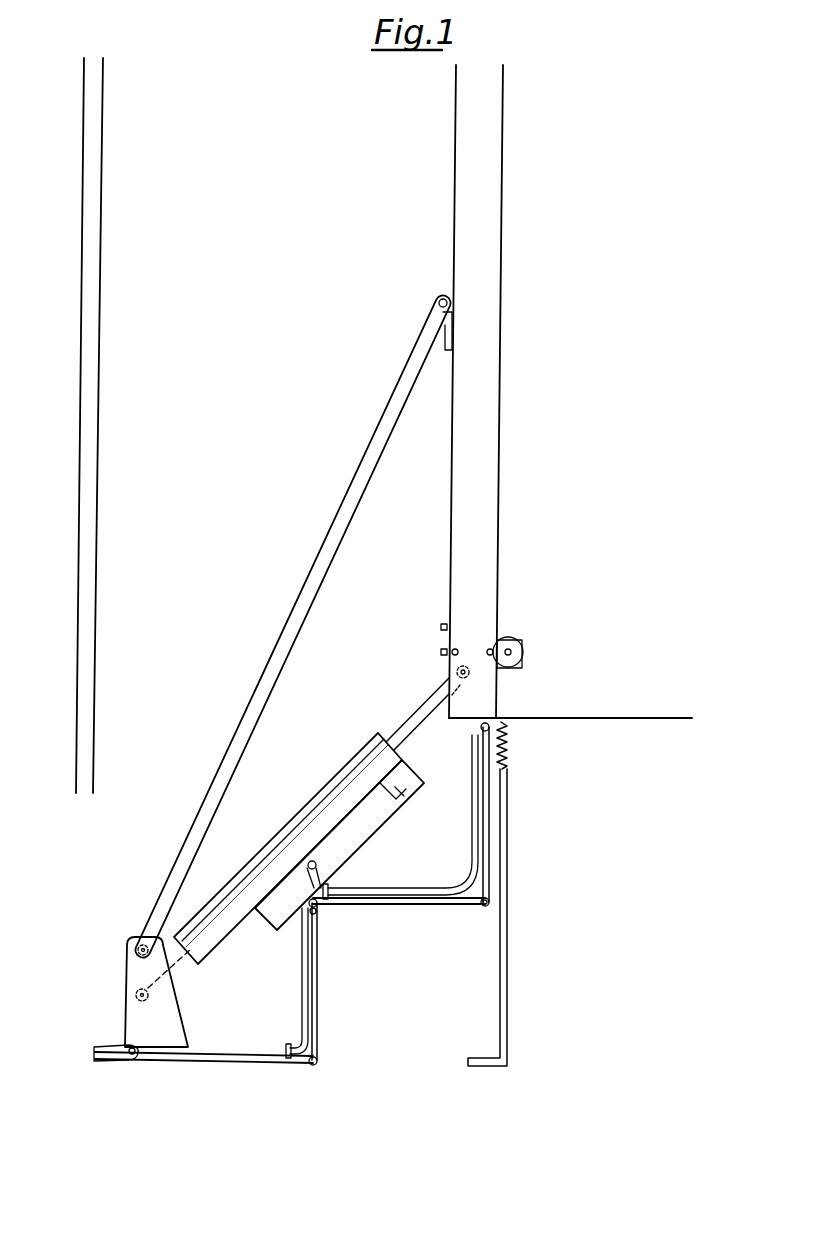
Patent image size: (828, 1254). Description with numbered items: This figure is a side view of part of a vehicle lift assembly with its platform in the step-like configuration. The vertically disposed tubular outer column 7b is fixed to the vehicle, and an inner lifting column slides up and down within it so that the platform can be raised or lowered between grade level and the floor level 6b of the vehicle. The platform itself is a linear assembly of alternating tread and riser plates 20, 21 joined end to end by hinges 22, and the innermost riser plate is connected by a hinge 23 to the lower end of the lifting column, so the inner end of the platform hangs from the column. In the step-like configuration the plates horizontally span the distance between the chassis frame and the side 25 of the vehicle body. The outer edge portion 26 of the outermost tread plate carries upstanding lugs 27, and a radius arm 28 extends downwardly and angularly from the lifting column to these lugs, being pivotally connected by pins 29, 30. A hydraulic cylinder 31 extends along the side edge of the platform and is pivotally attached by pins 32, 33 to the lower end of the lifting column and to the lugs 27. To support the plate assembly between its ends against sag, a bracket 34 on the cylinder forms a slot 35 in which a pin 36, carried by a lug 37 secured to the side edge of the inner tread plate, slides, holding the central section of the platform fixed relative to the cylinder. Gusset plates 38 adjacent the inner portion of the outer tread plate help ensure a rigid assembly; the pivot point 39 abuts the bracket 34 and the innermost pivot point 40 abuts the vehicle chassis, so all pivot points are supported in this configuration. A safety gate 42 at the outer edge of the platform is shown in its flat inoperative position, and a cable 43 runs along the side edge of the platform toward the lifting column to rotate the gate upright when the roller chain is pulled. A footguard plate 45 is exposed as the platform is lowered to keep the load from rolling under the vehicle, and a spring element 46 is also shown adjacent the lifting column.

The floor level 6b is at (593, 717).
The tubular outer column 7b is at (499, 176).
The tread plate 20 is at (215, 1064).
The riser plate 21 is at (318, 990).
The hinge 22 is at (318, 1062).
The hinge 23 is at (490, 724).
The side of the vehicle body 25 is at (100, 272).
The outer edge portion 26 is at (188, 1064).
The lug 27 is at (172, 1010).
The radius arm 28 is at (318, 565).
The pin 29 is at (143, 944).
The pin 30 is at (436, 298).
The hydraulic cylinder 31 is at (303, 830).
The pin 32 is at (458, 670).
The pin 33 is at (136, 992).
The bracket 34 is at (374, 824).
The slot 35 is at (398, 786).
The pin 36 is at (318, 868).
The lug 37 is at (332, 894).
The gusset plate 38 is at (298, 1048).
The pivot point 39 is at (320, 912).
The innermost pivot point 40 is at (487, 912).
The safety gate 42 is at (108, 1062).
The cable 43 is at (471, 856).
The footguard plate 45 is at (508, 868).
The spring 46 is at (508, 746).